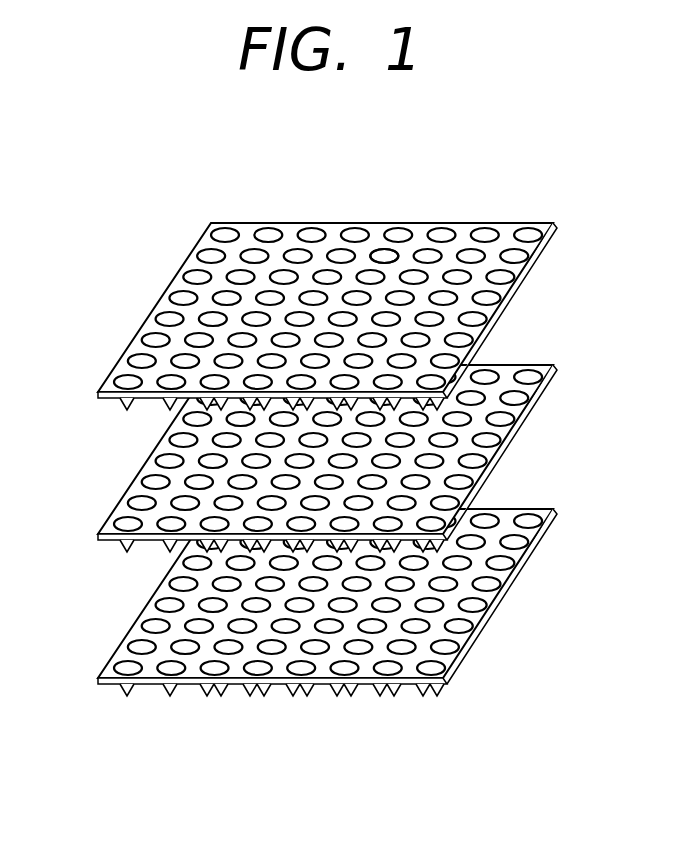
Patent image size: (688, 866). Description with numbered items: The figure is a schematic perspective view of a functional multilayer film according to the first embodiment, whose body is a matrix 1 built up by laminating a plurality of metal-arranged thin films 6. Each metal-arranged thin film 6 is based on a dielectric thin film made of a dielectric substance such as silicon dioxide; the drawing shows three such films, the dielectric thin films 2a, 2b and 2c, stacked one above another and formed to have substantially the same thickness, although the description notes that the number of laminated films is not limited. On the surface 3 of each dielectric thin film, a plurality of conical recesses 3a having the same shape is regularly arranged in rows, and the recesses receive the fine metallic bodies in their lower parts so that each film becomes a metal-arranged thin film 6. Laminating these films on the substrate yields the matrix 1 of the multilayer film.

The matrix 1 is at (213, 189).
The metal-arranged thin film 6 is at (141, 293).
The dielectric thin film 2a is at (518, 582).
The dielectric thin film 2b is at (518, 437).
The dielectric thin film 2c is at (342, 294).
The surface 3 is at (327, 294).
The conical recess 3a is at (385, 255).